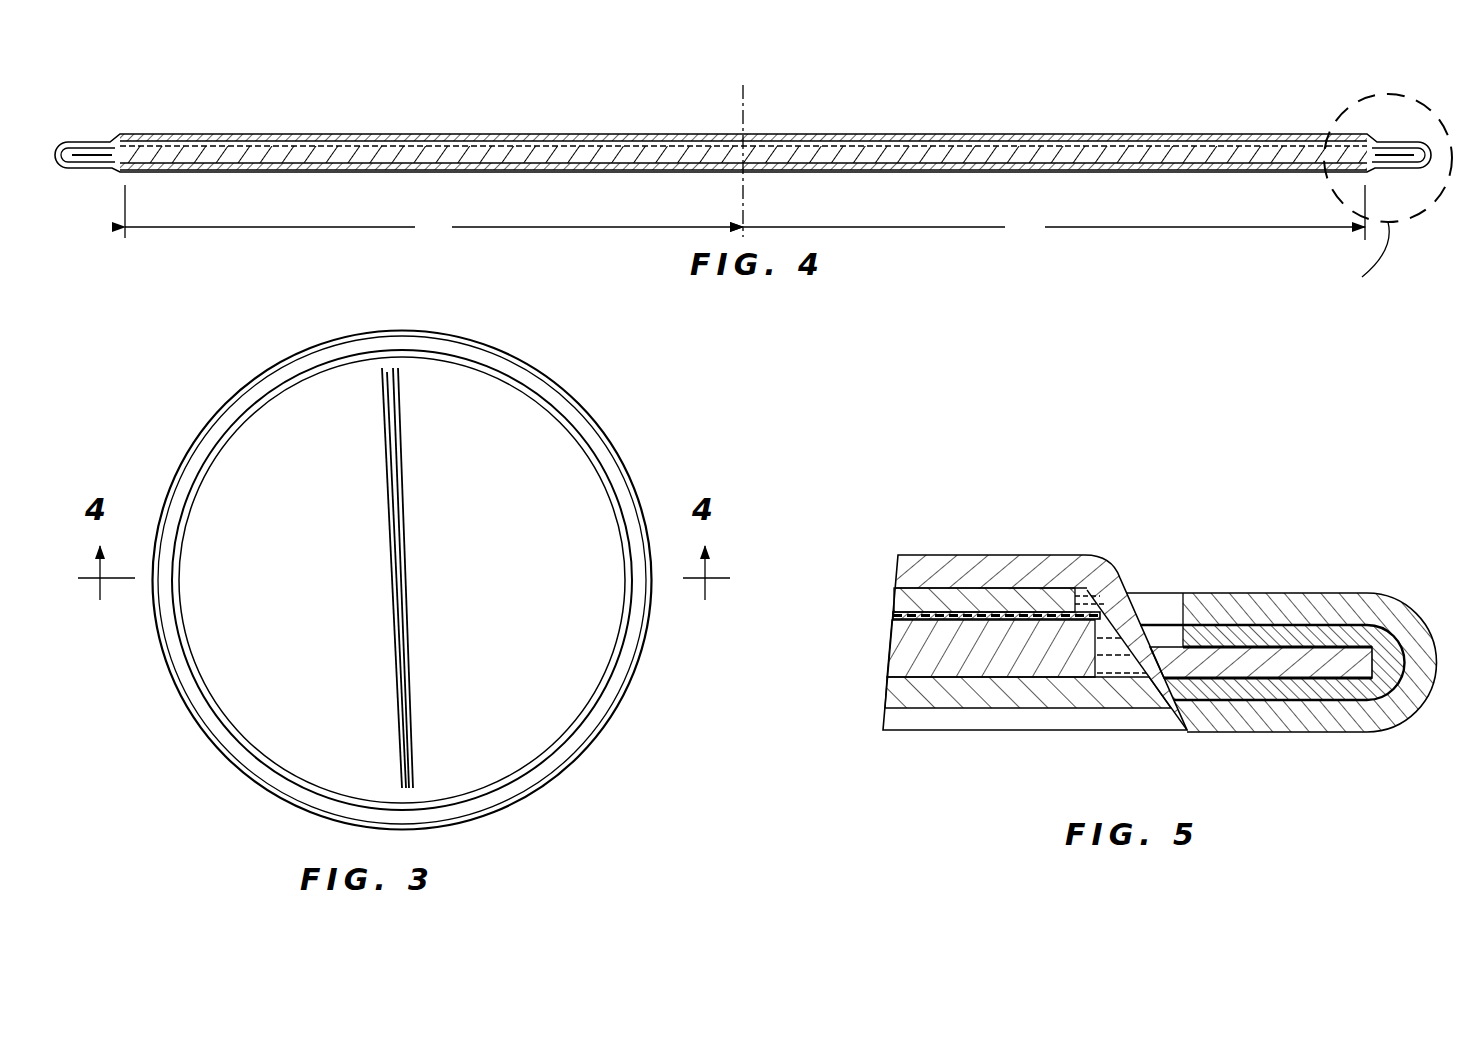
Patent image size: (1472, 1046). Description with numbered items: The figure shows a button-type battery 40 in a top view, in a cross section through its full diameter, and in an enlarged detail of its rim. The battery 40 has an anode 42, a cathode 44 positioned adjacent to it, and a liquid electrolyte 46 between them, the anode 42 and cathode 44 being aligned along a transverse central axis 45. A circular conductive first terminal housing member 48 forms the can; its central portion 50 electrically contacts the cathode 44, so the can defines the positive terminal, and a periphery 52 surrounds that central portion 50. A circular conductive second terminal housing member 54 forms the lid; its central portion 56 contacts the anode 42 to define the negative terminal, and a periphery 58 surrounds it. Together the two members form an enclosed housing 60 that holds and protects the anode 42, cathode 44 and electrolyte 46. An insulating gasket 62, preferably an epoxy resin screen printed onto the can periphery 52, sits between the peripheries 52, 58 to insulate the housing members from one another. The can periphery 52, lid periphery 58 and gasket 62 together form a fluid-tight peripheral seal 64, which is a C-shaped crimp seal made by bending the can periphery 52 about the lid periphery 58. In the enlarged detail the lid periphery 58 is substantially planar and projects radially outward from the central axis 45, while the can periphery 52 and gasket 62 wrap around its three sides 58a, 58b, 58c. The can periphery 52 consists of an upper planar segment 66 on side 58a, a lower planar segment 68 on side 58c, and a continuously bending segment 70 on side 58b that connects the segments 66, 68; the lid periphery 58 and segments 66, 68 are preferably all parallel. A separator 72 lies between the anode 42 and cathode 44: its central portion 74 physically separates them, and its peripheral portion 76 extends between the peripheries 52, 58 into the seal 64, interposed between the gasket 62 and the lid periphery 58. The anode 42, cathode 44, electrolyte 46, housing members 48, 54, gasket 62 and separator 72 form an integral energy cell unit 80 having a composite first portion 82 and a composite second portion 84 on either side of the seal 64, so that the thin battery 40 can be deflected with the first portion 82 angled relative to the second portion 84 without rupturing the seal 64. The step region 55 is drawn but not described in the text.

In FIG. 4, the button-type battery 40 is at (452, 107).
In FIG. 3, the button-type battery 40 is at (522, 336).
In FIG. 5, the button-type battery 40 is at (1088, 530).
In FIG. 4, the anode 42 is at (705, 135).
In FIG. 5, the anode 42 is at (1000, 596).
In FIG. 4, the cathode 44 is at (658, 155).
In FIG. 5, the cathode 44 is at (891, 656).
In FIG. 4, the transverse central axis 45 is at (743, 120).
In FIG. 4, the liquid electrolyte 46 is at (137, 172).
In FIG. 5, the liquid electrolyte 46 is at (1121, 681).
In FIG. 4, the first terminal housing member 48 is at (1093, 177).
In FIG. 3, the first terminal housing member 48 is at (560, 388).
In FIG. 5, the first terminal housing member 48 is at (1208, 736).
In FIG. 4, the central portion of first terminal housing member 50 is at (917, 167).
In FIG. 5, the central portion of first terminal housing member 50 is at (893, 701).
In FIG. 4, the periphery of first terminal housing member 52 is at (90, 170).
In FIG. 5, the periphery of first terminal housing member 52 is at (1284, 714).
In FIG. 4, the second terminal housing member 54 is at (975, 130).
In FIG. 3, the second terminal housing member 54 is at (432, 578).
In FIG. 5, the second terminal housing member 54 is at (1121, 568).
In FIG. 5, the step portion 55 is at (1140, 596).
In FIG. 4, the central portion of second terminal housing member 56 is at (850, 135).
In FIG. 5, the central portion of second terminal housing member 56 is at (950, 565).
In FIG. 4, the periphery of second terminal housing member 58 is at (103, 150).
In FIG. 5, the periphery of second terminal housing member 58 is at (1214, 654).
In FIG. 5, the first side of lid periphery 58a is at (1269, 627).
In FIG. 5, the second side of lid periphery 58b is at (1374, 697).
In FIG. 5, the third side of lid periphery 58c is at (1346, 689).
In FIG. 4, the enclosed housing 60 is at (637, 132).
In FIG. 4, the insulating gasket 62 is at (75, 148).
In FIG. 5, the insulating gasket 62 is at (1385, 642).
In FIG. 4, the fluid-tight peripheral seal 64 is at (1395, 127).
In FIG. 3, the fluid-tight peripheral seal 64 is at (293, 367).
In FIG. 5, the fluid-tight peripheral seal 64 is at (1409, 580).
In FIG. 5, the upper planar segment 66 is at (1183, 611).
In FIG. 5, the lower planar segment 68 is at (1237, 722).
In FIG. 5, the continuously bending segment 70 is at (1418, 642).
In FIG. 4, the separator 72 is at (1227, 137).
In FIG. 5, the separator 72 is at (1058, 600).
In FIG. 4, the central portion of separator 74 is at (807, 140).
In FIG. 5, the central portion of separator 74 is at (891, 609).
In FIG. 5, the peripheral portion of separator 76 is at (1173, 689).
In FIG. 4, the energy cell unit 80 is at (1112, 120).
In FIG. 4, the first portion of energy cell unit 82 is at (1054, 212).
In FIG. 4, the second portion of energy cell unit 84 is at (434, 212).